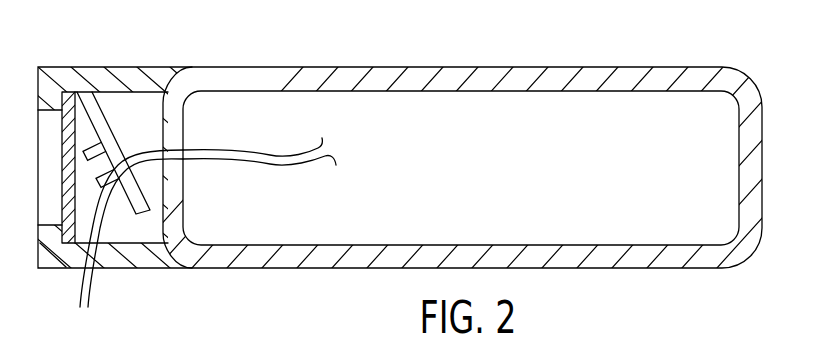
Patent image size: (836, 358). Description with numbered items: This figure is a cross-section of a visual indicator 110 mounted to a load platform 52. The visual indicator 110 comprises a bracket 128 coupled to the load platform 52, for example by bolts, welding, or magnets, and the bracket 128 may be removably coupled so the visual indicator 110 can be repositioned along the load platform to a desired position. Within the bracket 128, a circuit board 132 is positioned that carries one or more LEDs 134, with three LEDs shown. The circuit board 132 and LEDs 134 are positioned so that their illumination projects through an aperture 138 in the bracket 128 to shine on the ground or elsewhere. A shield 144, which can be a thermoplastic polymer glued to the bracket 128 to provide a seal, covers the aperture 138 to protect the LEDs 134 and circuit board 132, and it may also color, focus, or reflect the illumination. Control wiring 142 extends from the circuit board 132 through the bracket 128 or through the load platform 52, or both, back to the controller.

The visual indicator 110 is at (58, 276).
The load platform 52 is at (478, 67).
The bracket 128 is at (122, 66).
The aperture 138 is at (52, 135).
The shield 144 is at (93, 100).
The circuit board 132 is at (147, 220).
The LEDs 134 is at (128, 243).
The control wiring 142 is at (255, 165).